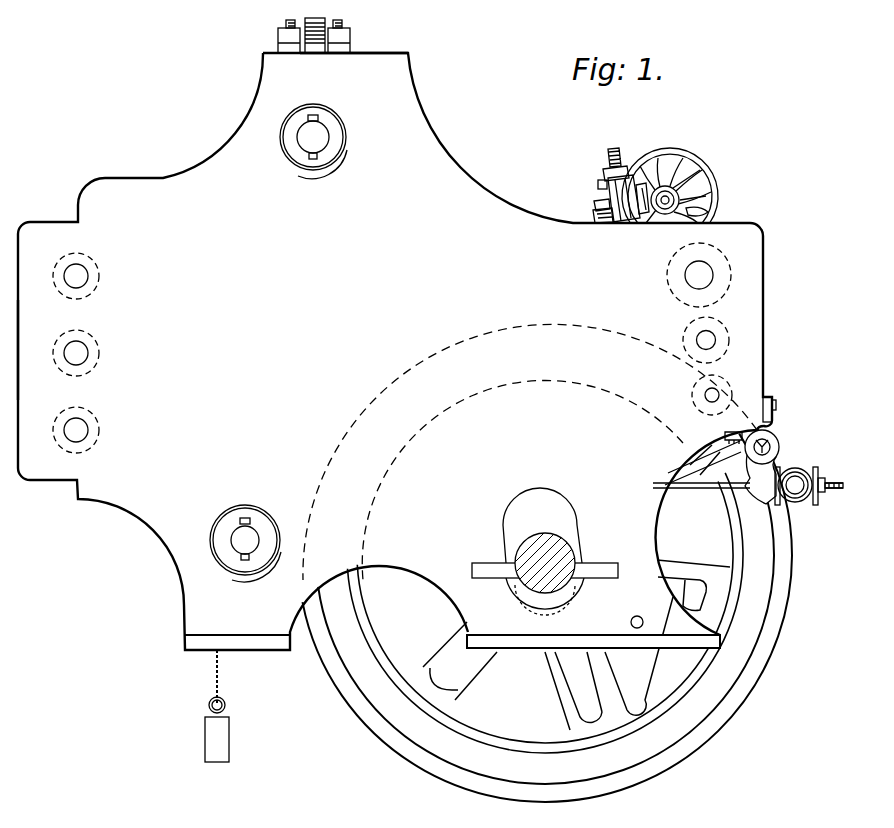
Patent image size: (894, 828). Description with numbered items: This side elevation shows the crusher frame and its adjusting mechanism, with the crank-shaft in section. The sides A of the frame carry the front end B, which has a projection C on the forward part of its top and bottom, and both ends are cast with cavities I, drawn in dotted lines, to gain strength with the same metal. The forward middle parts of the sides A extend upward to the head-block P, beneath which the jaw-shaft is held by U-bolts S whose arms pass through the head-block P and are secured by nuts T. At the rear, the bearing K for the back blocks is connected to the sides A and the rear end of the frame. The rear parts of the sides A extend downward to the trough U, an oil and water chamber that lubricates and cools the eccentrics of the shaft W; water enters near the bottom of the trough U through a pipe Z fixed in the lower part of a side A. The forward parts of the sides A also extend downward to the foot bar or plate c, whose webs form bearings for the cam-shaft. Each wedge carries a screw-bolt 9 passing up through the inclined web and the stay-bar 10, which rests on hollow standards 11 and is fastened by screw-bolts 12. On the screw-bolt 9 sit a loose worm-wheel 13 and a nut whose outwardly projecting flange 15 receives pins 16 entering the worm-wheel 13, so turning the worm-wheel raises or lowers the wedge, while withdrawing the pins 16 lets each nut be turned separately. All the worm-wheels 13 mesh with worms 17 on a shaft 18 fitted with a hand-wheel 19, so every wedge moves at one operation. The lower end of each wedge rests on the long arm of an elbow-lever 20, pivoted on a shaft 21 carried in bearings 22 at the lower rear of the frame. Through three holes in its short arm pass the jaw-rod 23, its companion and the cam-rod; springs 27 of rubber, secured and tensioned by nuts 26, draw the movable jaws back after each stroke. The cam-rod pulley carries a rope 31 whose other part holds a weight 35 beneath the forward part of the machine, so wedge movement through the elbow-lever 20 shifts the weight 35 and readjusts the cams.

The sides of the frame A is at (395, 351).
The front end of the frame B is at (28, 350).
The head-block P is at (354, 43).
The projection C is at (237, 642).
The foot bar or plate c is at (245, 543).
The U-bolts S is at (314, 28).
The nuts T is at (350, 42).
The bearing K is at (313, 141).
The cavities I is at (392, 348).
The shaft W is at (547, 562).
The trough U is at (593, 634).
The pipe Z is at (629, 621).
The rope 31 is at (230, 677).
The weight 35 is at (217, 729).
The hand-wheel 19 is at (670, 177).
The worms 17 is at (690, 176).
The shaft 18 is at (690, 203).
The hollow standards 11 is at (624, 198).
The screw-bolts 12 is at (610, 170).
The screw-bolt 9 is at (613, 151).
The stay-bar 10 is at (598, 183).
The flanges 15 is at (596, 201).
The worm-wheel 13 is at (593, 213).
The pins 16 is at (642, 190).
The bearings 22 is at (772, 416).
The shaft 21 is at (766, 449).
The elbow-lever 20 is at (778, 451).
The jaw-rod 23 is at (707, 489).
The springs 27 is at (800, 486).
The nuts 26 is at (834, 474).